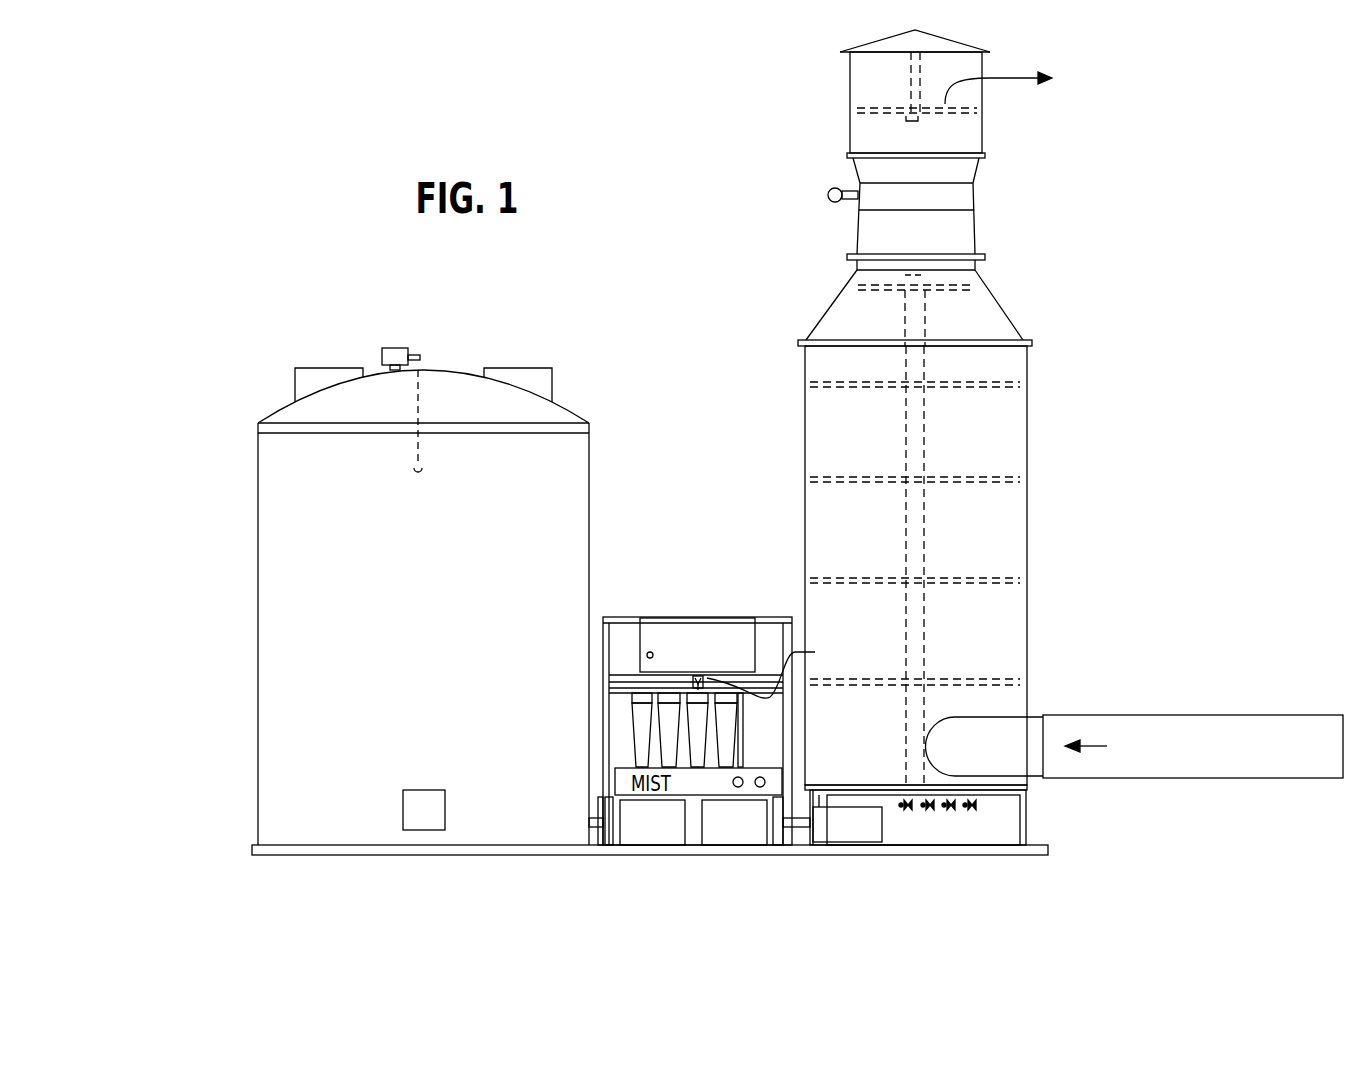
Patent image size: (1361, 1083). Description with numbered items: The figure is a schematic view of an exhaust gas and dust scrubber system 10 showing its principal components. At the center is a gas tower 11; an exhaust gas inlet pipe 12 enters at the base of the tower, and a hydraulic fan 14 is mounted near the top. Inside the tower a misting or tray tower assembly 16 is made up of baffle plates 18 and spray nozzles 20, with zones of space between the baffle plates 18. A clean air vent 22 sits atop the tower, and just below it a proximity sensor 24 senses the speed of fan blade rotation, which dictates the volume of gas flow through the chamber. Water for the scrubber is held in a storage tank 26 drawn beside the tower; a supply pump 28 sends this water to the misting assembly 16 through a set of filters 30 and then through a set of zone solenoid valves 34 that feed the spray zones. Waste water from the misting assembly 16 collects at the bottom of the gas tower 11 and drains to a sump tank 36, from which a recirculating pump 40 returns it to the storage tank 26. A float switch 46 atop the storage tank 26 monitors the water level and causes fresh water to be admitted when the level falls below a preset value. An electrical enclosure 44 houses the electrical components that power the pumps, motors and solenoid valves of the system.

The exhaust gas and dust scrubber system 10 is at (684, 314).
The gas tower 11 is at (1030, 365).
The exhaust gas inlet pipe 12 is at (1195, 715).
The hydraulic fan 14 is at (965, 228).
The misting or tray tower assembly 16 is at (995, 466).
The baffle plates 18 is at (838, 383).
The spray nozzles 20 is at (838, 578).
The clean air vent 22 is at (975, 61).
The proximity sensor 24 is at (828, 193).
The storage tank 26 is at (583, 481).
The supply pump 28 is at (678, 846).
The set of filters 30 is at (743, 737).
The zone solenoid valves 34 is at (978, 805).
The sump tank 36 is at (898, 828).
The recirculating pump 40 is at (702, 846).
The electrical enclosure 44 is at (650, 621).
The float switch 46 is at (398, 350).